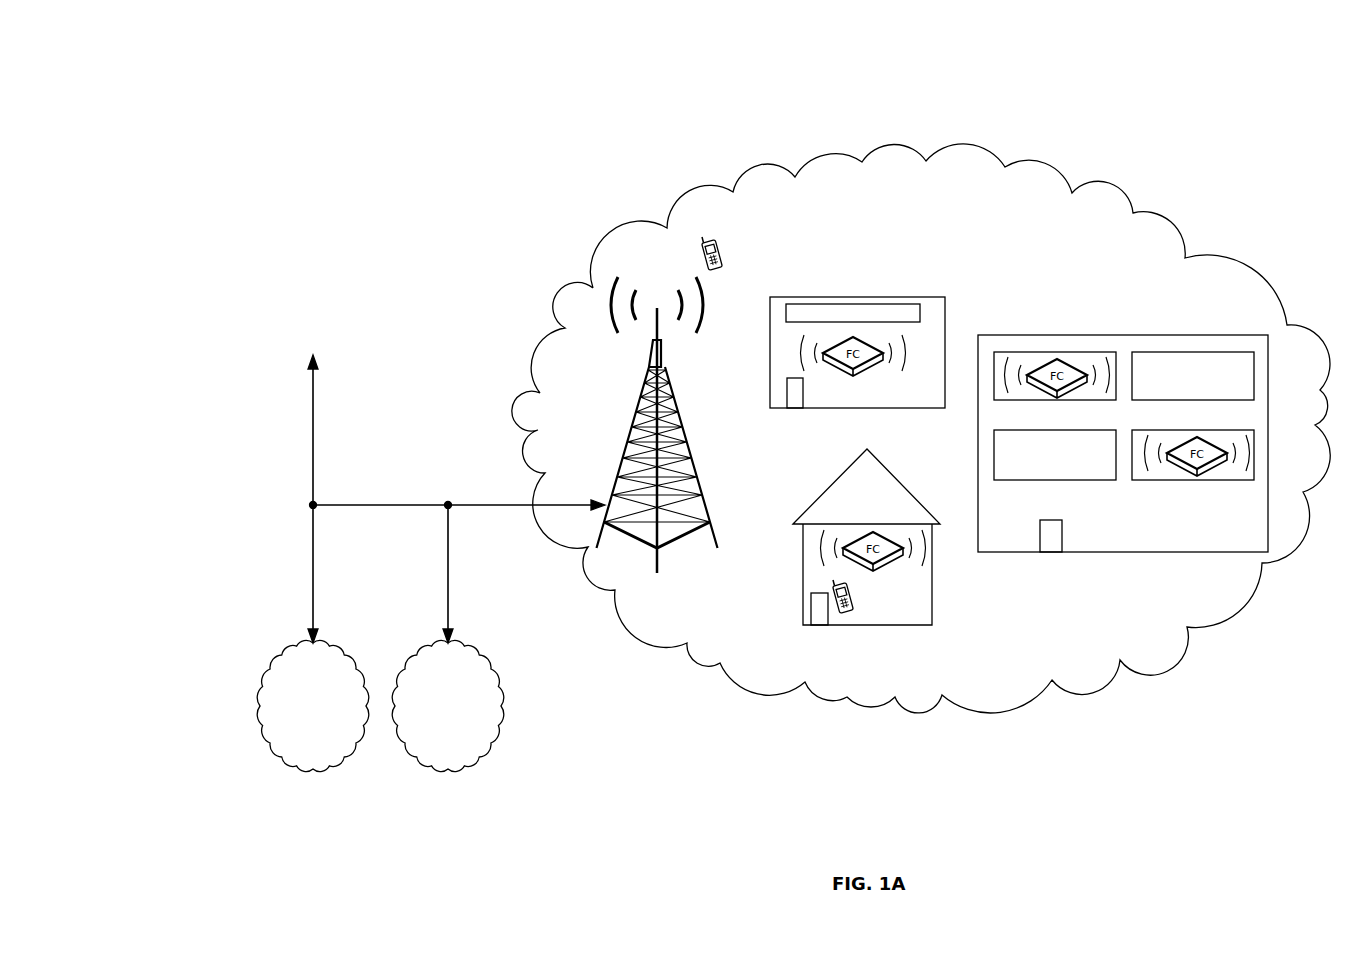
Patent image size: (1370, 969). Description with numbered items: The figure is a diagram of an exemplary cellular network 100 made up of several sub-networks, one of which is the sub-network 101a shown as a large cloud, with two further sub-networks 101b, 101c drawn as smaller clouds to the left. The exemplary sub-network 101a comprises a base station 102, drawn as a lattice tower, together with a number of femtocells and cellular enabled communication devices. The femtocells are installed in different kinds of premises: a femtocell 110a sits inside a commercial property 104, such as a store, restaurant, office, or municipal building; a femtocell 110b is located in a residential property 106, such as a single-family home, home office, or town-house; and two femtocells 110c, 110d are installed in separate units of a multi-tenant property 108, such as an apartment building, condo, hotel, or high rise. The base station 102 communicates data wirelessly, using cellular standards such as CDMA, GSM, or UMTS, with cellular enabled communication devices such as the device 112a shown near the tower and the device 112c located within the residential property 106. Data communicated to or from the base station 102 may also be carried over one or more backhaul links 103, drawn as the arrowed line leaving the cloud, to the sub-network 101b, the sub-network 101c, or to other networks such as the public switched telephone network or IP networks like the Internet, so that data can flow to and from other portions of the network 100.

The cellular network 100 is at (295, 108).
The sub-network 101a is at (754, 166).
The sub-network 101b is at (312, 770).
The sub-network 101c is at (448, 770).
The base station 102 is at (672, 397).
The backhaul links 103 is at (385, 505).
The commercial properties 104 is at (802, 297).
The residential properties 106 is at (837, 478).
The multi-tenant properties 108 is at (1268, 368).
The femtocell 110a is at (862, 368).
The femtocell 110b is at (877, 568).
The femtocell 110c is at (1070, 390).
The femtocell 110d is at (1203, 463).
The cellular enabled communication device 112a is at (718, 238).
The cellular enabled communication device 112c is at (852, 615).